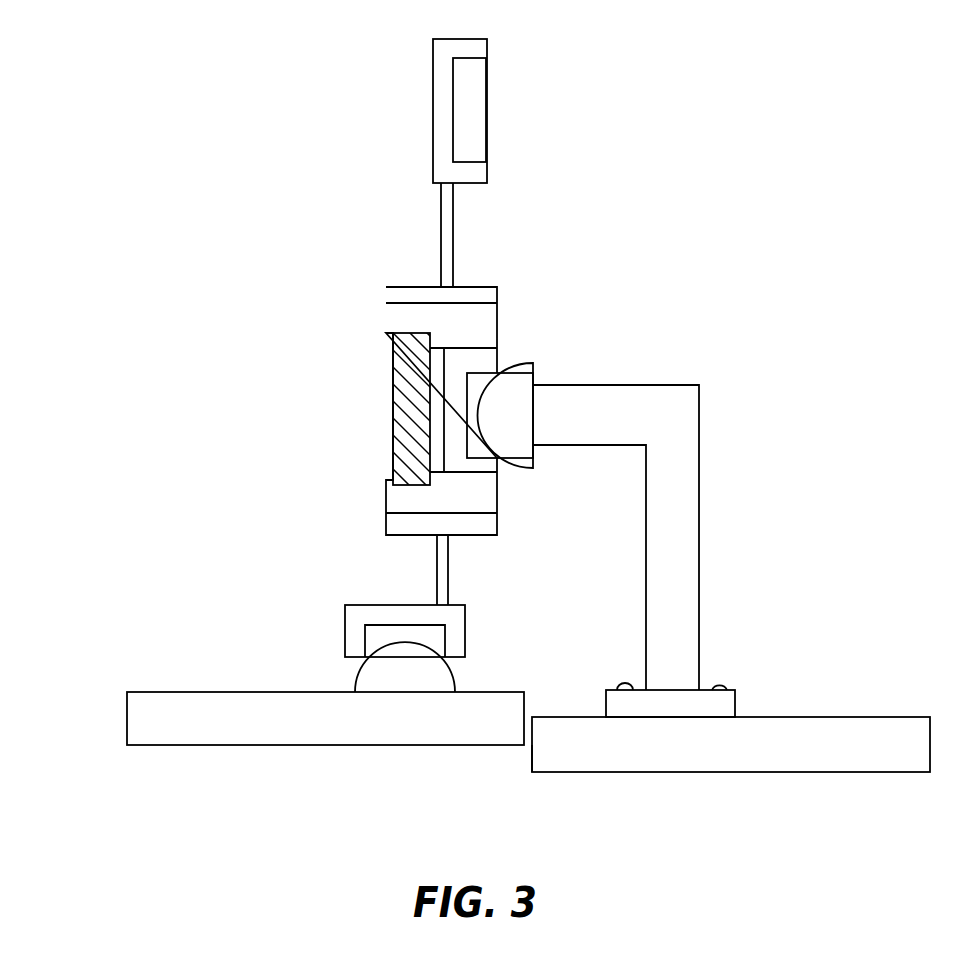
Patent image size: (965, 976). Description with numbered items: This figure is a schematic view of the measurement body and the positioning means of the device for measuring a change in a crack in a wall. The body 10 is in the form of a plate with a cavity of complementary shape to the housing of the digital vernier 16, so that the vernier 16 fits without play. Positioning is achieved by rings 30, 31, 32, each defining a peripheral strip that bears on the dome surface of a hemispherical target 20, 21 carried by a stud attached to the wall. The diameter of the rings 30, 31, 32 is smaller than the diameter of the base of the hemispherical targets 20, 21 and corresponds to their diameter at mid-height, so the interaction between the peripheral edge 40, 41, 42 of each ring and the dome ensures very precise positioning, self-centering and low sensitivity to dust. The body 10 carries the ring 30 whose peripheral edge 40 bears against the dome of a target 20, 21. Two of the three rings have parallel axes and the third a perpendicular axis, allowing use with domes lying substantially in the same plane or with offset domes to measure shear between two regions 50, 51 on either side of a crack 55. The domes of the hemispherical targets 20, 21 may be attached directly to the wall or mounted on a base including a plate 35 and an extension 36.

The body 10 is at (477, 298).
The digital vernier 16 is at (395, 383).
The hemispherical target 20 is at (512, 423).
The hemispherical target 21 is at (383, 677).
The ring 30 is at (482, 468).
The ring 31 is at (345, 642).
The ring 32 is at (477, 50).
The plate 35 is at (720, 705).
The extension 36 is at (677, 477).
The peripheral edge 40 is at (497, 373).
The peripheral edge 41 is at (447, 657).
The peripheral edge 42 is at (485, 165).
The region 50 is at (620, 772).
The region 51 is at (293, 743).
The crack 55 is at (532, 767).